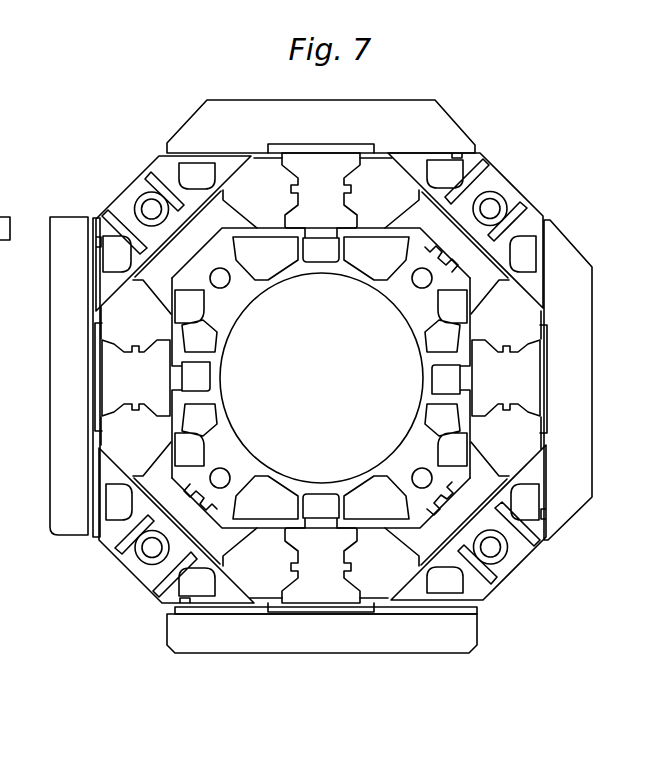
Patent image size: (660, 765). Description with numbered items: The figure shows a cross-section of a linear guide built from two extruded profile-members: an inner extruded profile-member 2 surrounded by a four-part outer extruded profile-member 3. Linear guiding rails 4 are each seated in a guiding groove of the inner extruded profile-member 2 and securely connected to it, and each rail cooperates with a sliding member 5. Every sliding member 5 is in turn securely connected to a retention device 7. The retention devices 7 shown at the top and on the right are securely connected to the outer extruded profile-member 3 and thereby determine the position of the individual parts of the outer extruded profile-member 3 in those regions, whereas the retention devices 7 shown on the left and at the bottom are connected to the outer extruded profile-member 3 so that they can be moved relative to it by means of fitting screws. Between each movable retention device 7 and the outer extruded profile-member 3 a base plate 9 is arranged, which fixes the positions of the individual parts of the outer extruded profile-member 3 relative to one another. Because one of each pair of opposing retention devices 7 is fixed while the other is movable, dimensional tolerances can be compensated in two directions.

The inner extruded profile-member 2 is at (452, 280).
The outer extruded profile-member 3 is at (527, 187).
The linear guiding rail 4 is at (305, 178).
The sliding member 5 is at (383, 193).
The retention device 7 is at (68, 235).
The base plate 9 is at (97, 217).